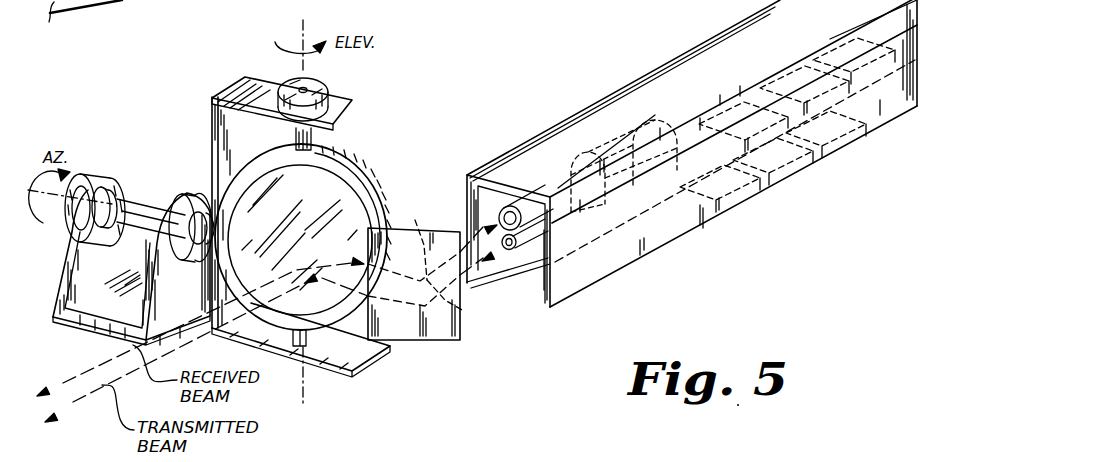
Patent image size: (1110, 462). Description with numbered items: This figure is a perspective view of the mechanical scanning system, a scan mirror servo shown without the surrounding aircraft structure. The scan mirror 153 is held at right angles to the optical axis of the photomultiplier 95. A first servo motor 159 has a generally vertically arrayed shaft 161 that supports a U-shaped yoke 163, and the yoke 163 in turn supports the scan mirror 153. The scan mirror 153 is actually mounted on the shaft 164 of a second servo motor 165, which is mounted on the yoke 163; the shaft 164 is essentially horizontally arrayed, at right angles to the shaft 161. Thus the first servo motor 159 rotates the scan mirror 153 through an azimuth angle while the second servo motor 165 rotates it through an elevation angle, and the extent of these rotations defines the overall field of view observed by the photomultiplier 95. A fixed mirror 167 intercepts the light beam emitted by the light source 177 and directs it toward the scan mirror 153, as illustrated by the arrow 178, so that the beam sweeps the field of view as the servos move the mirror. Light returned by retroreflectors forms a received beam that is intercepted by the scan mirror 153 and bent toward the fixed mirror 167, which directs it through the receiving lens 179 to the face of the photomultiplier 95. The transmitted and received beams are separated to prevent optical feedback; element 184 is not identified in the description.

The photomultiplier 95 is at (627, 152).
The scan mirror 153 is at (338, 168).
The servo motor 159 is at (92, 174).
The shaft 161 is at (143, 213).
The U-shaped yoke 163 is at (250, 79).
The shaft 164 is at (311, 137).
The second servo motor 165 is at (328, 85).
The fixed mirror 167 is at (460, 325).
The light source 177 is at (519, 250).
The arrow 178 is at (462, 310).
The receiving lens 179 is at (521, 200).
The beam splitter 184 is at (418, 200).